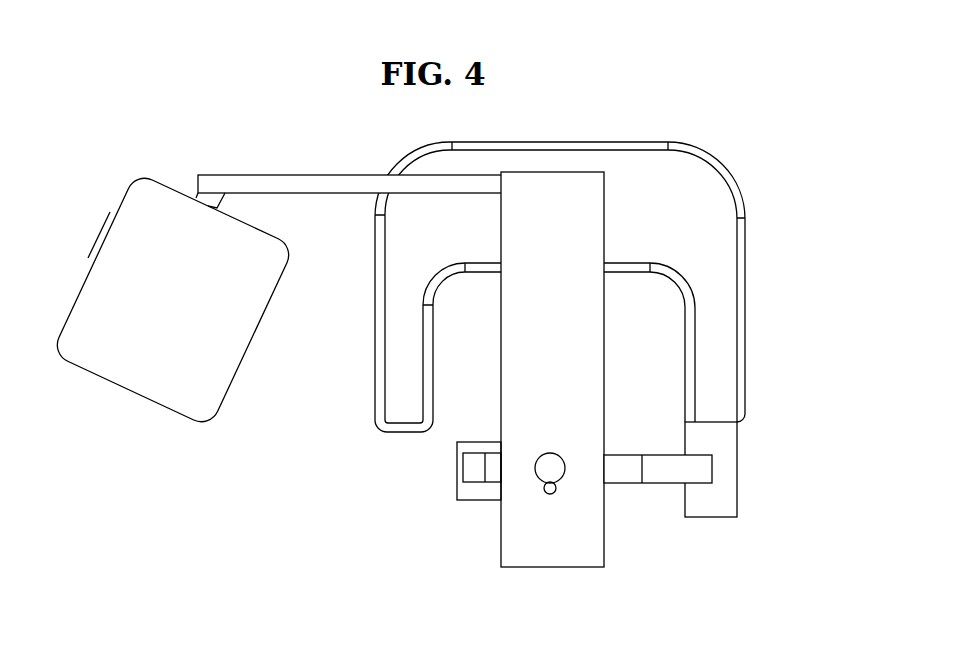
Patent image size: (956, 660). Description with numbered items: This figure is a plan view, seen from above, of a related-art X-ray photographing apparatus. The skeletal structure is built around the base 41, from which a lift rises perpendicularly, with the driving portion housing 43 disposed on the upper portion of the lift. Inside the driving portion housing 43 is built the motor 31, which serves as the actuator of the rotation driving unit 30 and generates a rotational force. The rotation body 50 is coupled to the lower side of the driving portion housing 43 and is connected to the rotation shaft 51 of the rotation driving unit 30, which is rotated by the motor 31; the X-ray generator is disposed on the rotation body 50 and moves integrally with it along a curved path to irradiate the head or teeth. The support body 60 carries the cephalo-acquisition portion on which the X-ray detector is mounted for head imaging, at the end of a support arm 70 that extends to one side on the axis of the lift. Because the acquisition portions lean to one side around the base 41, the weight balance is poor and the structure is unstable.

The rotation driving unit 30 is at (547, 516).
The motor 31 is at (556, 488).
The base 41 is at (747, 260).
The driving portion housing 43 is at (507, 528).
The rotation body 50 is at (663, 473).
The rotation shaft 51 is at (550, 468).
The support body 60 is at (133, 380).
The arm 70 is at (345, 187).